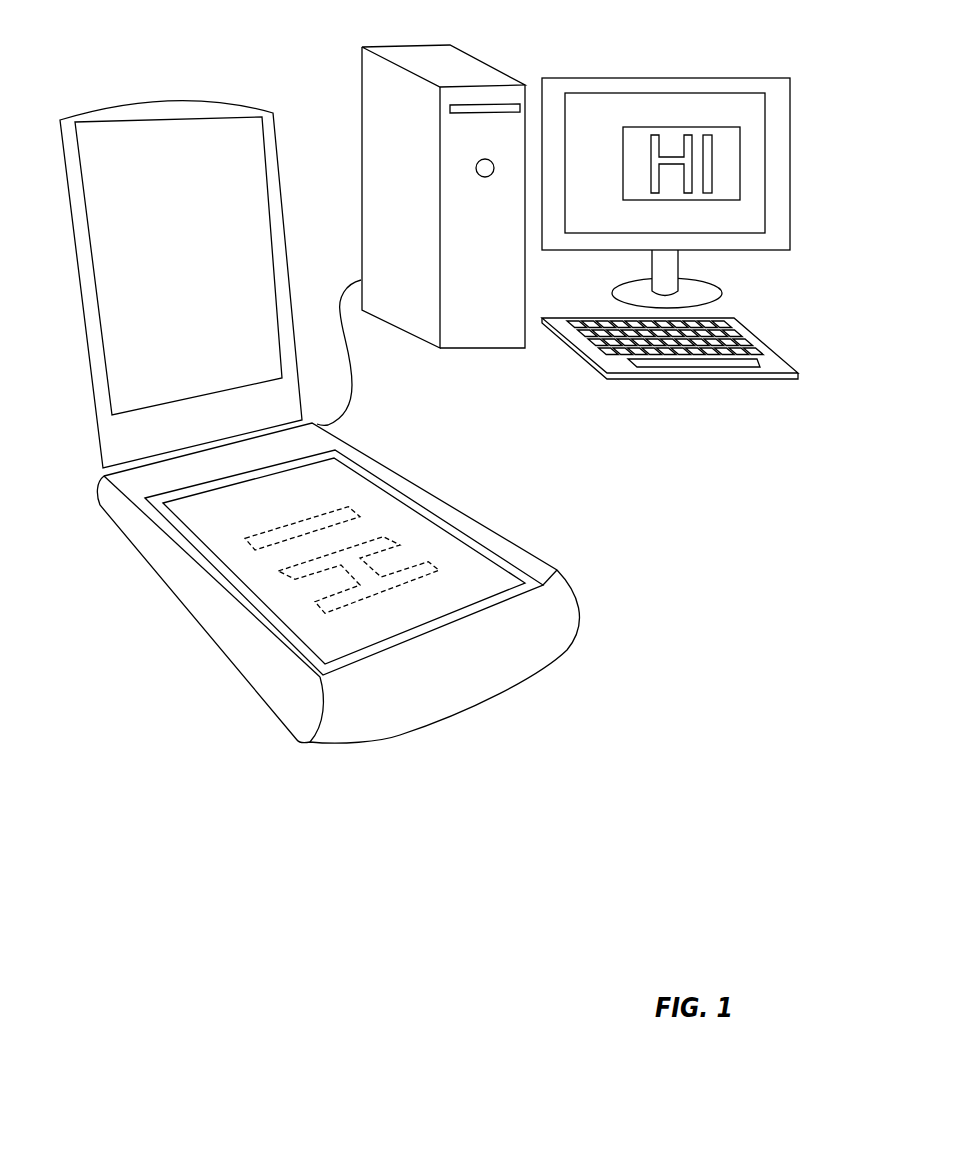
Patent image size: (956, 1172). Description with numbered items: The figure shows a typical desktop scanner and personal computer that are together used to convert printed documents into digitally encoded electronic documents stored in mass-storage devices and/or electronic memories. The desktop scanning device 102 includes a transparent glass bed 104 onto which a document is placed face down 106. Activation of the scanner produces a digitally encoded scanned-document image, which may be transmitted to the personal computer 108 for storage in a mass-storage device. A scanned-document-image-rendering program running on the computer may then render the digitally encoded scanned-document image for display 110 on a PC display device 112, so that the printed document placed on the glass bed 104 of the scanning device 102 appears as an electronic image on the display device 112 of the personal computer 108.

The desktop scanning device 102 is at (586, 623).
The transparent glass bed 104 is at (437, 520).
The document placed face down 106 is at (353, 488).
The personal computer 108 is at (463, 68).
The display of scanned-document image 110 is at (722, 160).
The PC display device 112 is at (588, 77).